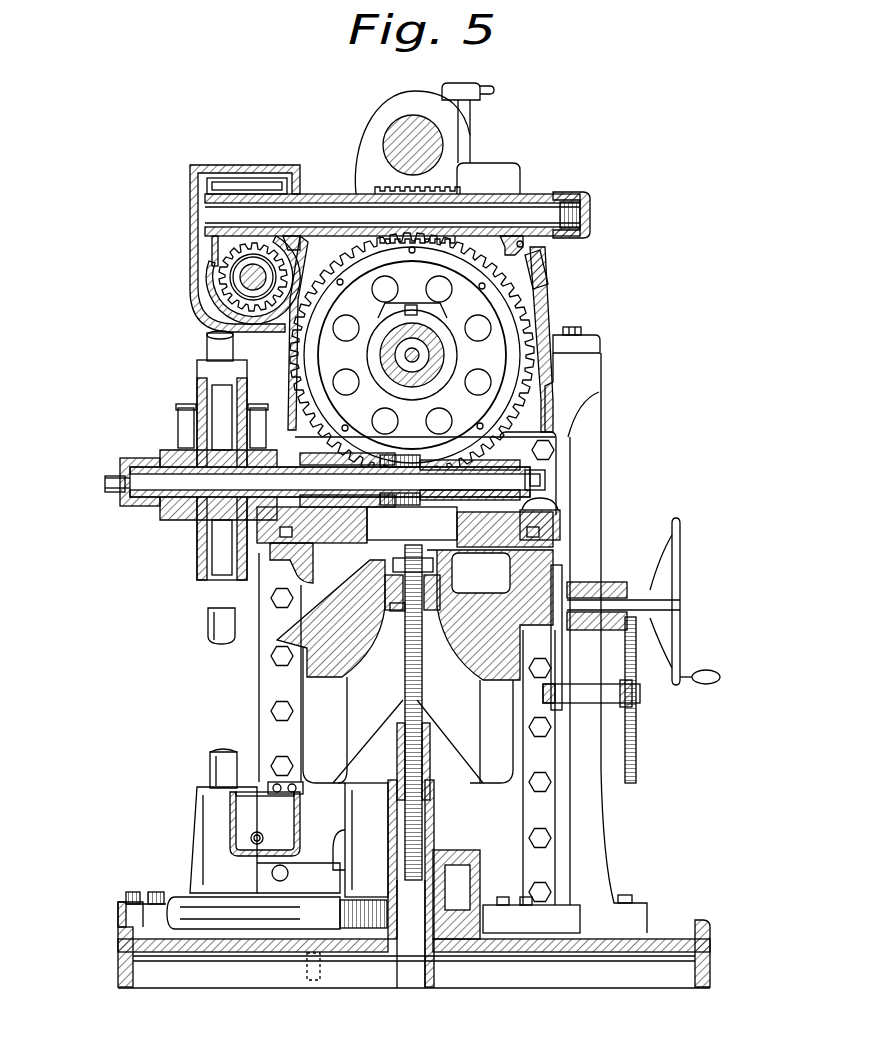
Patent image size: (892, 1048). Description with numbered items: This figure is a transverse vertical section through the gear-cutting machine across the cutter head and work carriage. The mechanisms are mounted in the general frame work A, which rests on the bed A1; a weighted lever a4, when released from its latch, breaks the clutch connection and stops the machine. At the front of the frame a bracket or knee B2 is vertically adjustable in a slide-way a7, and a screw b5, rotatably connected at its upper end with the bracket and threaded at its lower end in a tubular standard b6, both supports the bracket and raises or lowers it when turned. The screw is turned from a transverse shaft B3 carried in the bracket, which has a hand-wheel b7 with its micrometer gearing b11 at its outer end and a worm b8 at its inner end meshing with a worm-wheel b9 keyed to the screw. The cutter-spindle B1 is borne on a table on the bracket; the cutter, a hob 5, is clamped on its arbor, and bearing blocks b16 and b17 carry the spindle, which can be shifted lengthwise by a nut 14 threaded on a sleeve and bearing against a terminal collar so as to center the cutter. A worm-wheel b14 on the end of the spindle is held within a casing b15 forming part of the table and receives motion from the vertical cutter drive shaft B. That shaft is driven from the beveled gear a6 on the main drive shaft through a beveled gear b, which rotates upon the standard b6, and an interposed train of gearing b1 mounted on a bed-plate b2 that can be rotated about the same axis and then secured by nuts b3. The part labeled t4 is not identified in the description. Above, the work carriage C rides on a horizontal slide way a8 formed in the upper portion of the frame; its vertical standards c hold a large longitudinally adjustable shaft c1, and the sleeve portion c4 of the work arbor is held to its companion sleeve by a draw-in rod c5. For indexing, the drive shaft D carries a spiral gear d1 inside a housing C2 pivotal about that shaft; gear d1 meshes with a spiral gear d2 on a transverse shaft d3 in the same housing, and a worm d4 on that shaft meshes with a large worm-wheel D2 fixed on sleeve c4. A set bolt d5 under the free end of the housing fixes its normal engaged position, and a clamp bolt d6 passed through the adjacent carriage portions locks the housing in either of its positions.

The indexing drive shaft D is at (215, 268).
The spiral gear d1 is at (235, 262).
The spiral gear d2 is at (212, 190).
The transverse shaft d3 is at (522, 215).
The worm d4 is at (445, 192).
The vertical standards c is at (372, 150).
The shaft c1 is at (392, 128).
The housing C2 is at (338, 192).
The worm-wheel D2 is at (515, 330).
The set bolt d5 is at (575, 265).
The clamp bolt d6 is at (570, 196).
The carriage C is at (548, 300).
The draw-in rod c5 is at (420, 345).
The sleeve c4 is at (446, 355).
The horizontal slide way a8 is at (557, 370).
The frame work A is at (598, 805).
The bed A1 is at (520, 975).
The train of gearing b1 is at (367, 925).
The beveled gear b is at (366, 855).
The cutter drive shaft B is at (214, 628).
The nuts b3 is at (150, 893).
The bed-plate b2 is at (300, 912).
The beveled gear a6 is at (455, 855).
The slide-way a7 is at (300, 690).
The worm-wheel b14 is at (200, 405).
The weighted lever a4 is at (212, 352).
The casing b15 is at (180, 432).
The nut 14 is at (132, 505).
The bearing block b17 is at (352, 456).
The hob 5 is at (395, 456).
The bearing block b16 is at (470, 458).
The cutter-spindle B1 is at (508, 468).
The clamp t4 is at (548, 492).
The shaft B3 is at (562, 588).
The hand-wheel b7 is at (682, 578).
The gearing b11 is at (640, 662).
The bracket B2 is at (342, 662).
The screw b5 is at (405, 650).
The tubular standard b6 is at (432, 770).
The worm b8 is at (385, 600).
The worm-wheel b9 is at (395, 612).